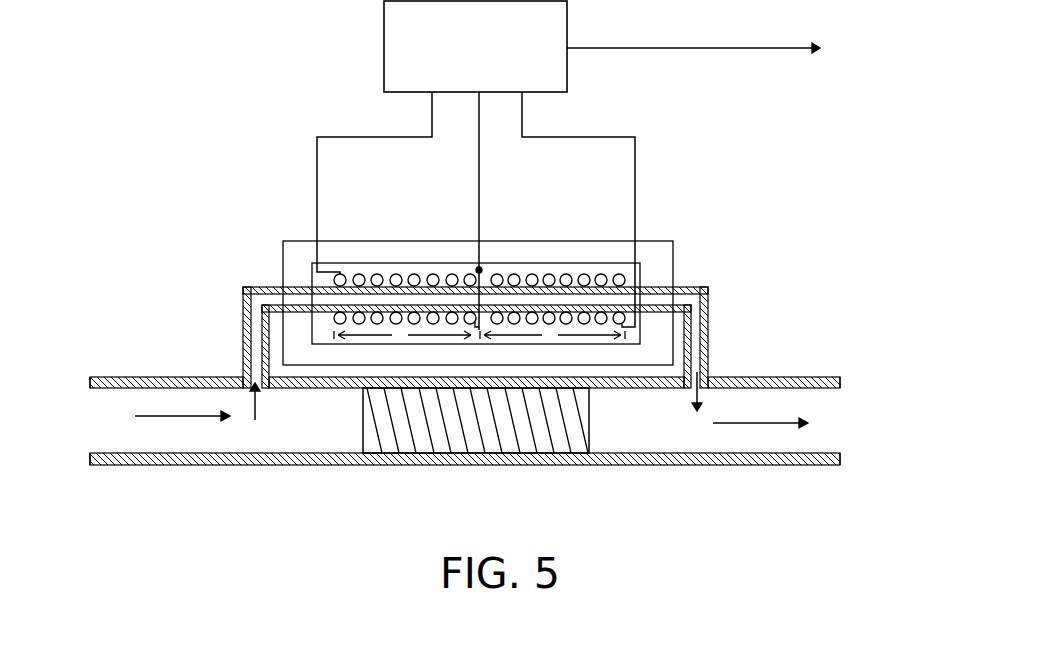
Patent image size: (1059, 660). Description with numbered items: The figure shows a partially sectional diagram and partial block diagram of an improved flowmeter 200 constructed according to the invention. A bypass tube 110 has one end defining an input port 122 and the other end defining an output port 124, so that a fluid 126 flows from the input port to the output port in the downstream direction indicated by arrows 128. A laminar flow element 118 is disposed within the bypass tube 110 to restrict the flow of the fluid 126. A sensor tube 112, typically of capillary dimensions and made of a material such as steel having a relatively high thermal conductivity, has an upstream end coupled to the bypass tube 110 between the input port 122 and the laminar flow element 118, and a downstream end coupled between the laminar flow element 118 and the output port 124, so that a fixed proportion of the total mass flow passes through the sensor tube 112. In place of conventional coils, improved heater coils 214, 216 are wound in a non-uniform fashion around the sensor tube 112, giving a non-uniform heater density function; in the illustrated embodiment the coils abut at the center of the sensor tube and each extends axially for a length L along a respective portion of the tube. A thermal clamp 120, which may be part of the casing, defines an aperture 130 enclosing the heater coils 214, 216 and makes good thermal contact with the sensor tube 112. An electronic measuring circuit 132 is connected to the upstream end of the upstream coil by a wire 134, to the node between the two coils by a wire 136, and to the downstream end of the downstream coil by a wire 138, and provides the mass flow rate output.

The bypass tube 110 is at (667, 470).
The sensor tube 112 is at (708, 320).
The laminar flow element 118 is at (590, 443).
The thermal clamp 120 is at (658, 238).
The input port 122 is at (90, 420).
The output port 124 is at (842, 428).
The fluid 126 is at (332, 429).
The arrows 128 is at (178, 417).
The aperture 130 is at (476, 262).
The electronic measuring circuit 132 is at (499, 57).
The wire 134 is at (316, 183).
The wire 136 is at (480, 207).
The wire 138 is at (635, 162).
The improved flowmeter 200 is at (335, 515).
The upstream heater coil 214 is at (360, 263).
The downstream heater coil 216 is at (600, 263).